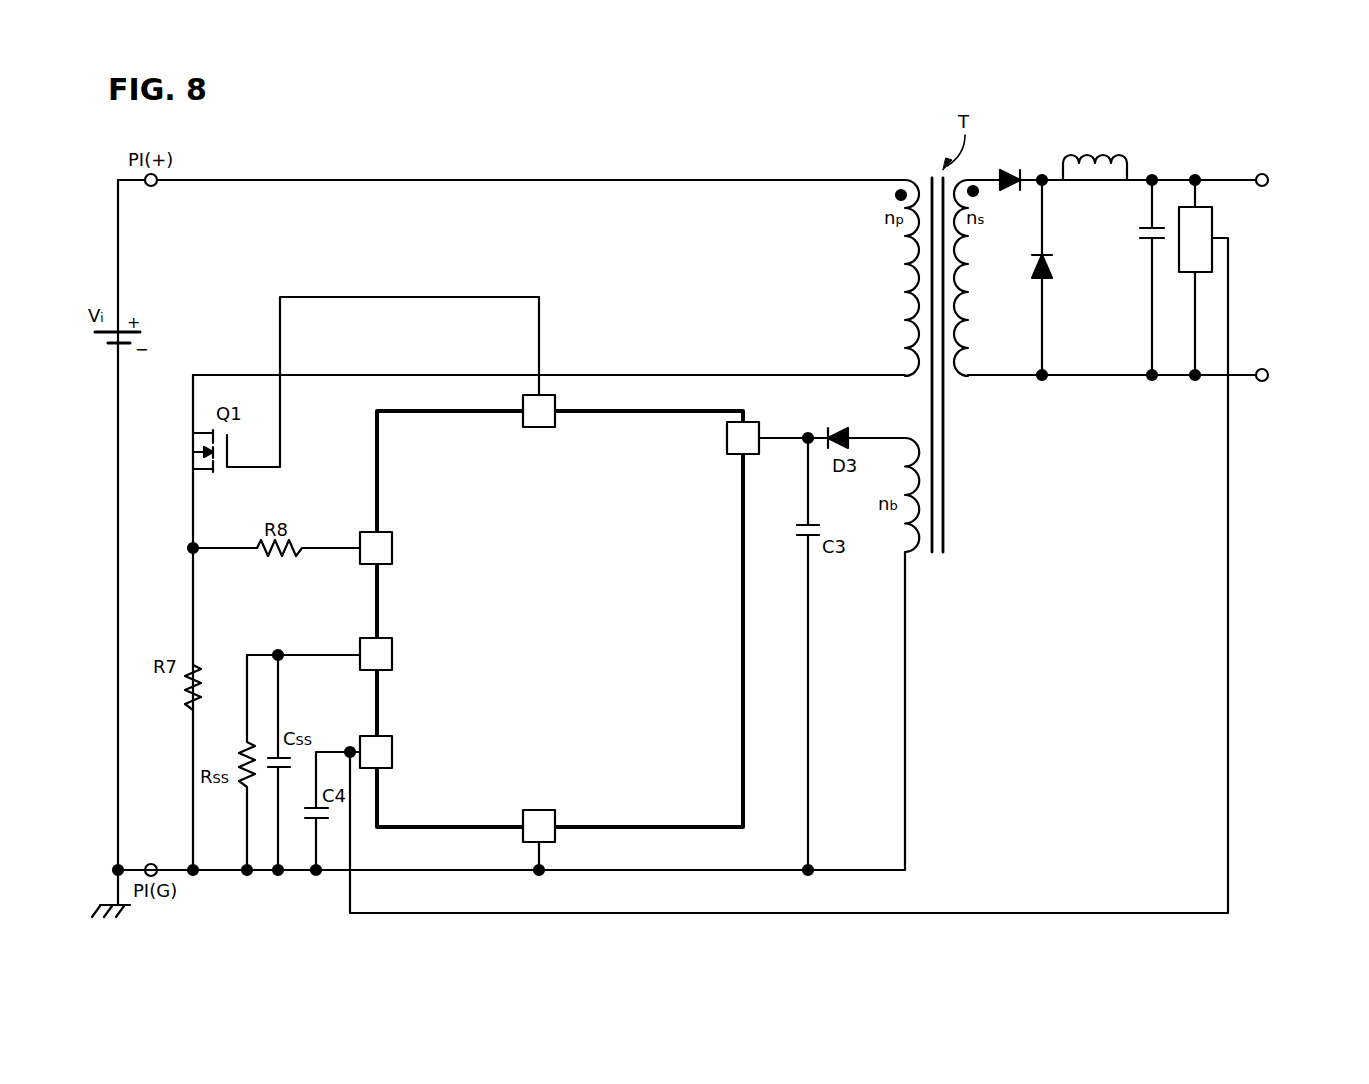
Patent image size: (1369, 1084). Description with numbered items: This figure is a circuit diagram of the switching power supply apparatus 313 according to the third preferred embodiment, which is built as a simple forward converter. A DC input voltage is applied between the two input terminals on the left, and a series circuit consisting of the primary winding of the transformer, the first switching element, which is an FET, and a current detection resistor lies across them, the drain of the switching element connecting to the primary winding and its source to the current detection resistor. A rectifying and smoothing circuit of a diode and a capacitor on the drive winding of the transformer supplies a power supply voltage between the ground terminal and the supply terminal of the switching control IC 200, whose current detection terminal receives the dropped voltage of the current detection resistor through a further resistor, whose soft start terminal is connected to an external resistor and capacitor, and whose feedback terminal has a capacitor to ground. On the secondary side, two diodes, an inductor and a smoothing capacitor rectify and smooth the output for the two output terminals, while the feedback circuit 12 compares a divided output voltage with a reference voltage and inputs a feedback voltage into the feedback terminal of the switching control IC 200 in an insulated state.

The feedback circuit 12 is at (1212, 216).
The switching control IC 200 is at (641, 411).
The switching power supply apparatus 313 is at (1148, 253).